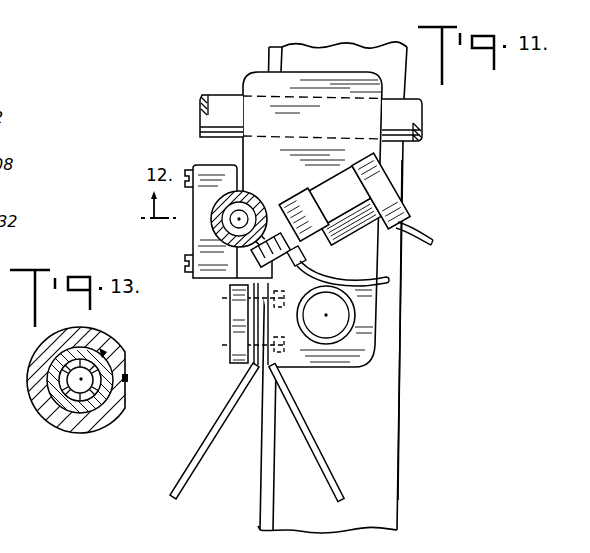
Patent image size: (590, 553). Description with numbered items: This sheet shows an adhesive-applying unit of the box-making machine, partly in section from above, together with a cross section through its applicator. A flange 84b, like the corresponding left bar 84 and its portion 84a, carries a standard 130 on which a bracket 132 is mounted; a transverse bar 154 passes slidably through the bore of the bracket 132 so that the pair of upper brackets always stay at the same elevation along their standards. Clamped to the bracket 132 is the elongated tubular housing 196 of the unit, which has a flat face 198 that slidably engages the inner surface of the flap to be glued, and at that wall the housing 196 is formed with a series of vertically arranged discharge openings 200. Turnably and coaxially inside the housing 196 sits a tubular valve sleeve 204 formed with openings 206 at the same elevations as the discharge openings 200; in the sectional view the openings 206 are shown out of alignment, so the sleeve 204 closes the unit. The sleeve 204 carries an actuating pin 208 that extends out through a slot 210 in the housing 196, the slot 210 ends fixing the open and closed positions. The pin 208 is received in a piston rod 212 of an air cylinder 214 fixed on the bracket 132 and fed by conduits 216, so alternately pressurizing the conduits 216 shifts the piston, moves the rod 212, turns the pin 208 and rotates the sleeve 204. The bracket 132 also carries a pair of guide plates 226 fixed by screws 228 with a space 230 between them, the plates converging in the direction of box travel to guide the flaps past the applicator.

In FIG. 11, the left bar 84 is at (324, 297).
In FIG. 11, the panel inner portion 84a is at (263, 468).
In FIG. 11, the flange 84b is at (383, 493).
In FIG. 11, the standard 130 is at (333, 316).
In FIG. 11, the bracket 132 is at (348, 128).
In FIG. 11, the transverse bar 154 is at (425, 130).
In FIG. 11, the elongated tubular housing 196 is at (238, 191).
In FIG. 13, the elongated tubular housing 196 is at (84, 433).
In FIG. 13, the flat face 198 is at (110, 360).
In FIG. 13, the discharge openings 200 is at (126, 377).
In FIG. 13, the valve sleeve 204 is at (52, 412).
In FIG. 13, the openings 206 is at (104, 352).
In FIG. 11, the actuating pin 208 is at (293, 262).
In FIG. 11, the slot 210 is at (236, 247).
In FIG. 11, the piston rod 212 is at (376, 193).
In FIG. 11, the air cylinder 214 is at (360, 203).
In FIG. 11, the conduits 216 is at (448, 243).
In FIG. 11, the guide plates 226 is at (194, 452).
In FIG. 11, the screws 228 is at (226, 343).
In FIG. 11, the space 230 is at (248, 368).